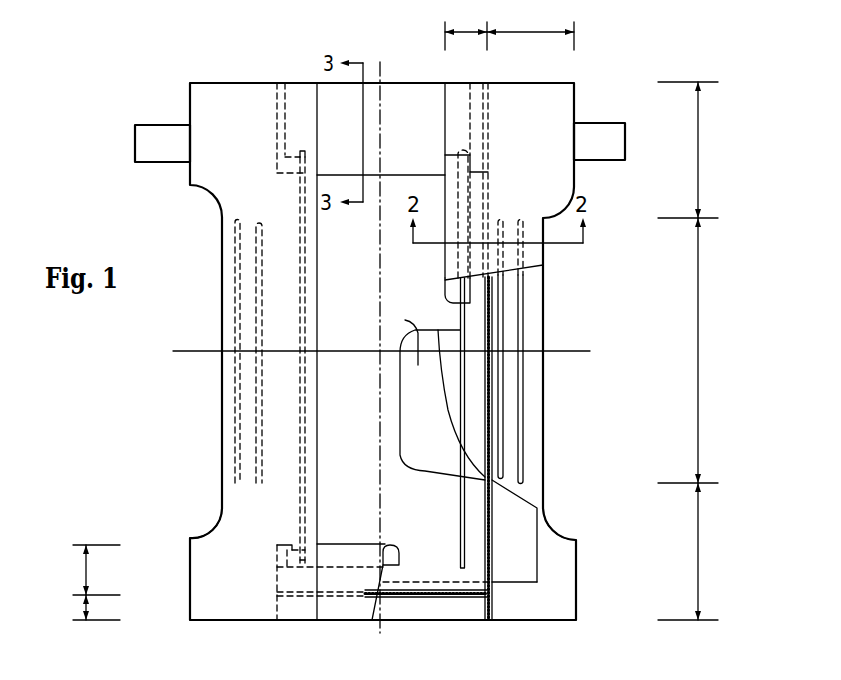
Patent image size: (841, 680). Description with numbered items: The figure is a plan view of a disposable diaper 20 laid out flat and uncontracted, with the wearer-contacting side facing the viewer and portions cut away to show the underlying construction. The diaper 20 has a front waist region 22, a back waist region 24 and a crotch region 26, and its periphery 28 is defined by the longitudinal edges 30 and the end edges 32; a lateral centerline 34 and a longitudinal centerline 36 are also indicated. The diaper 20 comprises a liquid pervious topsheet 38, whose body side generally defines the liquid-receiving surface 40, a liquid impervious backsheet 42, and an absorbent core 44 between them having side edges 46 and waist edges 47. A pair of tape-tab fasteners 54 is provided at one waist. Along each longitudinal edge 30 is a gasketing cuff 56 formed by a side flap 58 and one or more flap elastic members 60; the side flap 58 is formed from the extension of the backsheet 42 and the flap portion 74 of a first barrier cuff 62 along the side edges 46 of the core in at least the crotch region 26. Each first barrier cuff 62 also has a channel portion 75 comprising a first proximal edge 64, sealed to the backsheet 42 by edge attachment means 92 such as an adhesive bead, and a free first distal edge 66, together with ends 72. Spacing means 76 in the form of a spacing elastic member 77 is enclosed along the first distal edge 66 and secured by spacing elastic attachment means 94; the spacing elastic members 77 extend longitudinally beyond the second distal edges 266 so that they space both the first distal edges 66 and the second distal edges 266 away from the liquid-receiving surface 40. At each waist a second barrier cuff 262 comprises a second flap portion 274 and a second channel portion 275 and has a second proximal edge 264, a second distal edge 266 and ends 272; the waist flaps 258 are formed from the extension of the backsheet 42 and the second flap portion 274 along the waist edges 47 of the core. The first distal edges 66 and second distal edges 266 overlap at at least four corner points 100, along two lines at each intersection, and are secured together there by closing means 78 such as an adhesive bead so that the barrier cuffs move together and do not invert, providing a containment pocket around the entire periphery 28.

The diaper 20 is at (90, 179).
The front waist region 22 is at (688, 551).
The back waist region 24 is at (688, 150).
The crotch region 26 is at (688, 350).
The periphery 28 is at (225, 621).
The longitudinal edges 30 is at (222, 505).
The end edges 32 is at (520, 83).
The lateral centerline 34 is at (187, 351).
The longitudinal centerline 36 is at (382, 630).
The topsheet 38 is at (430, 505).
The liquid-receiving surface 40 is at (417, 354).
The backsheet 42 is at (548, 532).
The absorbent core 44 is at (437, 443).
The side edges 46 is at (522, 502).
The waist edges 47 is at (517, 583).
The tape-tab fasteners 54 is at (174, 156).
The gasketing cuffs 56 is at (245, 266).
The side flap 58 is at (532, 422).
The flap elastic members 60 is at (500, 393).
The first barrier cuffs 62 is at (292, 403).
The first proximal edge 64 is at (503, 278).
The first distal edge 66 is at (445, 107).
The ends 72 is at (458, 97).
The flap portion 74 is at (530, 32).
The channel portion 75 is at (464, 32).
The spacing means 76 is at (297, 248).
The spacing elastic member 77 is at (462, 340).
The closing means 78 is at (283, 83).
The edge attachment means 92 is at (490, 372).
The elastic end 94 is at (309, 620).
The corner points 100 is at (325, 177).
The waist flaps 258 is at (467, 608).
The second barrier cuffs 262 is at (353, 583).
The second proximal edge 264 is at (374, 593).
The second distal edge 266 is at (377, 175).
The ends 272 is at (273, 120).
The second flap portion 274 is at (86, 615).
The second channel portion 275 is at (86, 574).